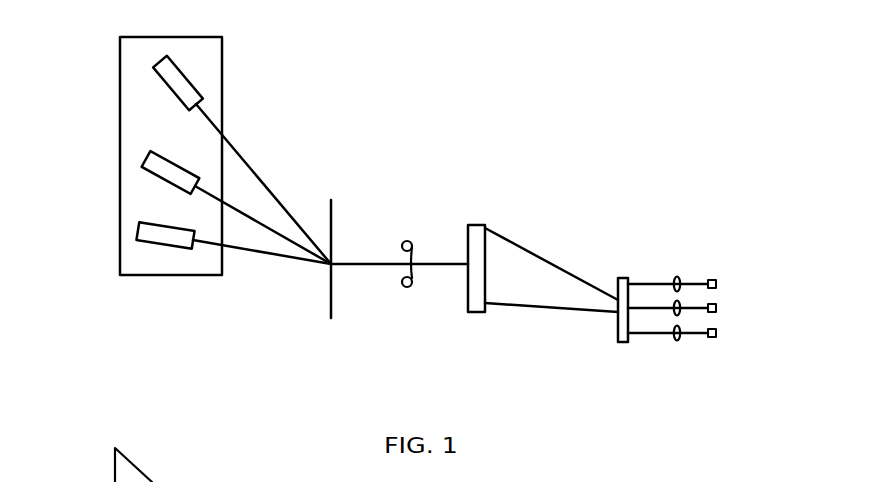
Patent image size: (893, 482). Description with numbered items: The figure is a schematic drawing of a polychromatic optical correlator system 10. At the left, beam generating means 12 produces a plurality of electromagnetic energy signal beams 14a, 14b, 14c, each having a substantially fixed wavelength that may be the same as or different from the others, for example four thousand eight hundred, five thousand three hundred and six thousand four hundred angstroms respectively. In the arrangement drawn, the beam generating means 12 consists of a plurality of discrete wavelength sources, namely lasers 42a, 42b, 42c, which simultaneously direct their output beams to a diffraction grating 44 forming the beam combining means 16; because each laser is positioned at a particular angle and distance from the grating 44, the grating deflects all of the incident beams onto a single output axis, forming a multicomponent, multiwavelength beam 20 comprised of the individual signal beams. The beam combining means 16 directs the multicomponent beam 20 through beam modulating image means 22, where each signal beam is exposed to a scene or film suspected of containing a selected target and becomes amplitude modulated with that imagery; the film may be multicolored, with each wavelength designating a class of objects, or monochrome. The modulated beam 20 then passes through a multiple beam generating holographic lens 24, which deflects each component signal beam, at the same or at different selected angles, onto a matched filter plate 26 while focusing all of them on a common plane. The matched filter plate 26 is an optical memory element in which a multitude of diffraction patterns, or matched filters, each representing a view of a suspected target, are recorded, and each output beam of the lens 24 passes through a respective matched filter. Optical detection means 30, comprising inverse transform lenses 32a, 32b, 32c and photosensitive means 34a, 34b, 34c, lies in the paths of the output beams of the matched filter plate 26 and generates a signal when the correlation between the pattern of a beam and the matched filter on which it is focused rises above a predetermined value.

The polychromatic optical correlator system 10 is at (468, 112).
The beam generating means 12 is at (203, 37).
The signal beam 14a is at (246, 158).
The signal beam 14b is at (257, 218).
The signal beam 14c is at (285, 256).
The beam combining means 16 is at (346, 196).
The multicomponent, multiwavelength beam 20 is at (367, 266).
The beam modulating image means 22 is at (412, 241).
The multiple beam generating holographic lens 24 is at (481, 225).
The matched filter plate 26 is at (617, 337).
The optical detection means 30 is at (698, 262).
The inverse transform lens 32a is at (673, 278).
The inverse transform lens 32b is at (675, 316).
The inverse transform lens 32c is at (680, 341).
The photosensitive means 34a is at (718, 283).
The photosensitive means 34b is at (718, 307).
The photosensitive means 34c is at (718, 333).
The laser 42a is at (170, 93).
The laser 42b is at (158, 177).
The laser 42c is at (158, 245).
The diffraction grating 44 is at (330, 299).